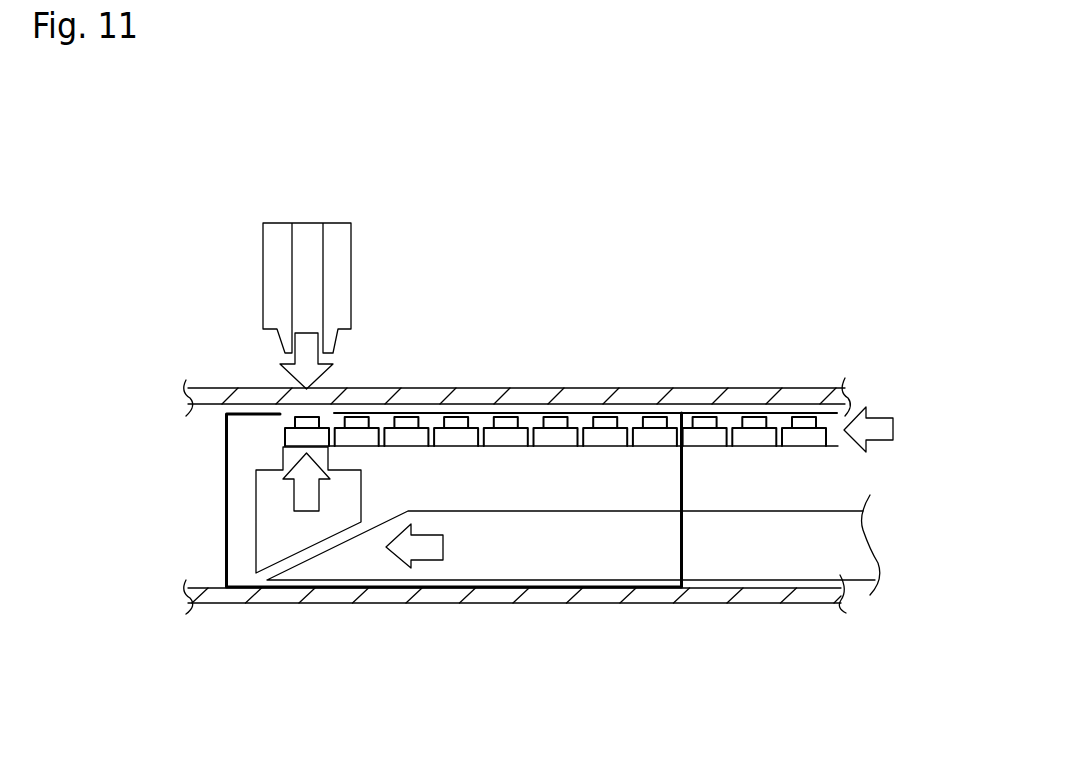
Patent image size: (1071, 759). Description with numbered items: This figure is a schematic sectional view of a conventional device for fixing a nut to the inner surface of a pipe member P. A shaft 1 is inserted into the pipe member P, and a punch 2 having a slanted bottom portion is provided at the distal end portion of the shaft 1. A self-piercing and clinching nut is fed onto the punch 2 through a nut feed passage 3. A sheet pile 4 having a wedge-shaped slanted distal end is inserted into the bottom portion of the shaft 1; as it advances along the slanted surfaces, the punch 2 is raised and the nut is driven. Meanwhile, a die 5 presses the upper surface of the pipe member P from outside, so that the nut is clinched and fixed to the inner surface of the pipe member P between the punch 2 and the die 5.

The shaft 1 is at (226, 542).
The punch 2 is at (263, 483).
The nut feed passage 3 is at (835, 423).
The sheet pile 4 is at (861, 572).
The die 5 is at (352, 272).
The pipe member P is at (658, 387).